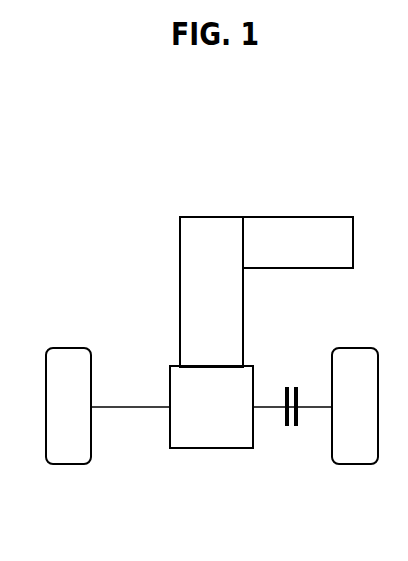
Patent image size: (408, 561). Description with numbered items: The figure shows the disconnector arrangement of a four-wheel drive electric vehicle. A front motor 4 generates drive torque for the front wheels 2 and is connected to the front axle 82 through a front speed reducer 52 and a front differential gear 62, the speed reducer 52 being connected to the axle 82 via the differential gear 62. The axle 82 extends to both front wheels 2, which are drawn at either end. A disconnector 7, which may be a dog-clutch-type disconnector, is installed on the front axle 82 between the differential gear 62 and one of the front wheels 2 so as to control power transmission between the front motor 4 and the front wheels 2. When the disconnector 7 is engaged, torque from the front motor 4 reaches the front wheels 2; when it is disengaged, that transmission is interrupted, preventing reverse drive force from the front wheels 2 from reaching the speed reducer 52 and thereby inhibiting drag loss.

The front wheels 2 is at (66, 348).
The front motor 4 is at (314, 216).
The disconnector 7 is at (293, 427).
The speed reducer 52 is at (221, 216).
The differential gear 62 is at (210, 448).
The axle 82 is at (128, 408).